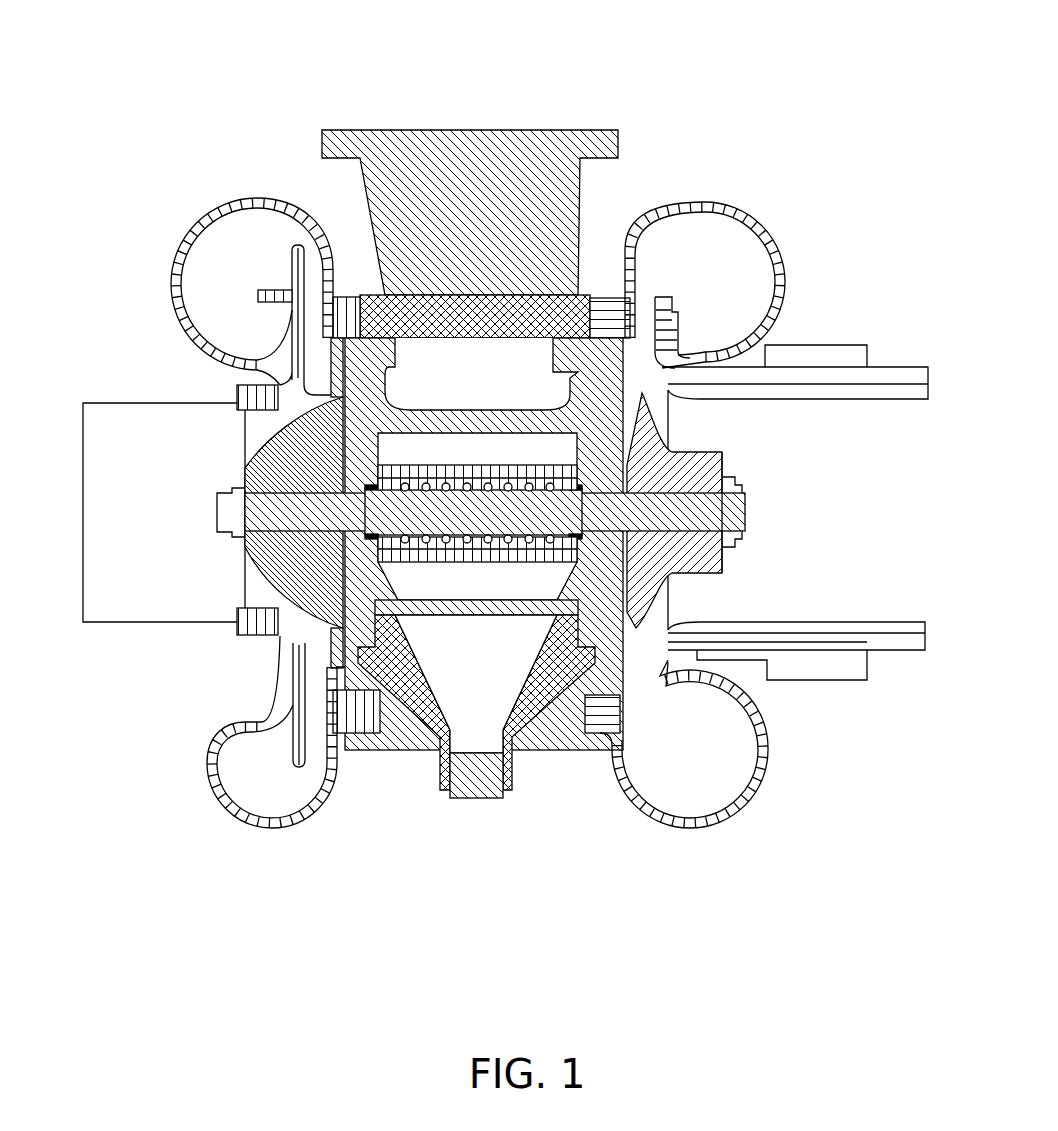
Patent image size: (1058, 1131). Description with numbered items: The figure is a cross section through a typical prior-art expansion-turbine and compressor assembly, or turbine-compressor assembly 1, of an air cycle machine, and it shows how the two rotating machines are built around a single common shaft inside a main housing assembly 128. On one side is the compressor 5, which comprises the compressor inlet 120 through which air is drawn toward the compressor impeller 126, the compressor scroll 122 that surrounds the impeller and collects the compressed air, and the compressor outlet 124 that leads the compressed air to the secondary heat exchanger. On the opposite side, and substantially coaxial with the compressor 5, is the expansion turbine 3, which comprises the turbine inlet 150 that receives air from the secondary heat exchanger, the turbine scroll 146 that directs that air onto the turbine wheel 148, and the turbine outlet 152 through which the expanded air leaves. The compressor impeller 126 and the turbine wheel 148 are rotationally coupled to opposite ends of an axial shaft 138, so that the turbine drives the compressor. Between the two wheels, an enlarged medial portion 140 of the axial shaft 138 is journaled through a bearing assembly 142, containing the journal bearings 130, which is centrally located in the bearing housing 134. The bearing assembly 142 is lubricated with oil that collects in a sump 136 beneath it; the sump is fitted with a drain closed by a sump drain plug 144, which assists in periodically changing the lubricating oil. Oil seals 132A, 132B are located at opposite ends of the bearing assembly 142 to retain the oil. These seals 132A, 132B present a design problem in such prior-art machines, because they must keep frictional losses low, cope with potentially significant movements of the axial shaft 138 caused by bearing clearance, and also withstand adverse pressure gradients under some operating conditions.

The turbine-compressor assembly 1 is at (493, 425).
The expansion turbine 3 is at (766, 506).
The compressor 5 is at (200, 497).
The compressor inlet 120 is at (133, 587).
The compressor scroll 122 is at (195, 228).
The compressor outlet 124 is at (252, 782).
The compressor impeller 126 is at (273, 468).
The main housing assembly 128 is at (385, 150).
The journal bearings 130 is at (548, 487).
The oil seal 132A is at (370, 542).
The oil seal 132B is at (565, 542).
The bearing housing 134 is at (333, 398).
The sump 136 is at (450, 664).
The axial shaft 138 is at (436, 505).
The enlarged medial portion of axial shaft 140 is at (520, 512).
The bearing assembly 142 is at (447, 462).
The sump drain plug 144 is at (465, 787).
The turbine scroll 146 is at (778, 255).
The turbine wheel 148 is at (698, 478).
The turbine inlet 150 is at (717, 765).
The turbine outlet 152 is at (908, 593).